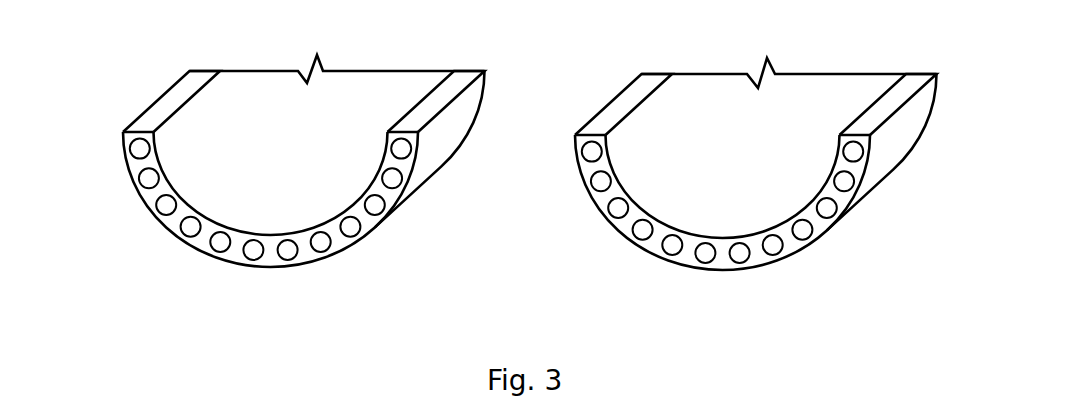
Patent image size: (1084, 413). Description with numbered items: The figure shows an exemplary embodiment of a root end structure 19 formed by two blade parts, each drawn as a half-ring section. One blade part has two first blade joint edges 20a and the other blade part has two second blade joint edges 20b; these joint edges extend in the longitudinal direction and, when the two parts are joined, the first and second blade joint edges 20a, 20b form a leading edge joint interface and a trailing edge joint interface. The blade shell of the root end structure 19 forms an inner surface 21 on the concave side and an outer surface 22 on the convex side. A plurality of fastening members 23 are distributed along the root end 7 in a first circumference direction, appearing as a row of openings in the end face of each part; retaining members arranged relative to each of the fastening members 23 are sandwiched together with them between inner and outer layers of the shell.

The root end 7 is at (128, 170).
The root end structure 19 is at (595, 73).
The first blade joint edges 20a is at (177, 95).
The second blade joint edges 20b is at (628, 98).
The inner surface 21 is at (290, 157).
The outer surface 22 is at (442, 147).
The fastening members 23 is at (190, 225).